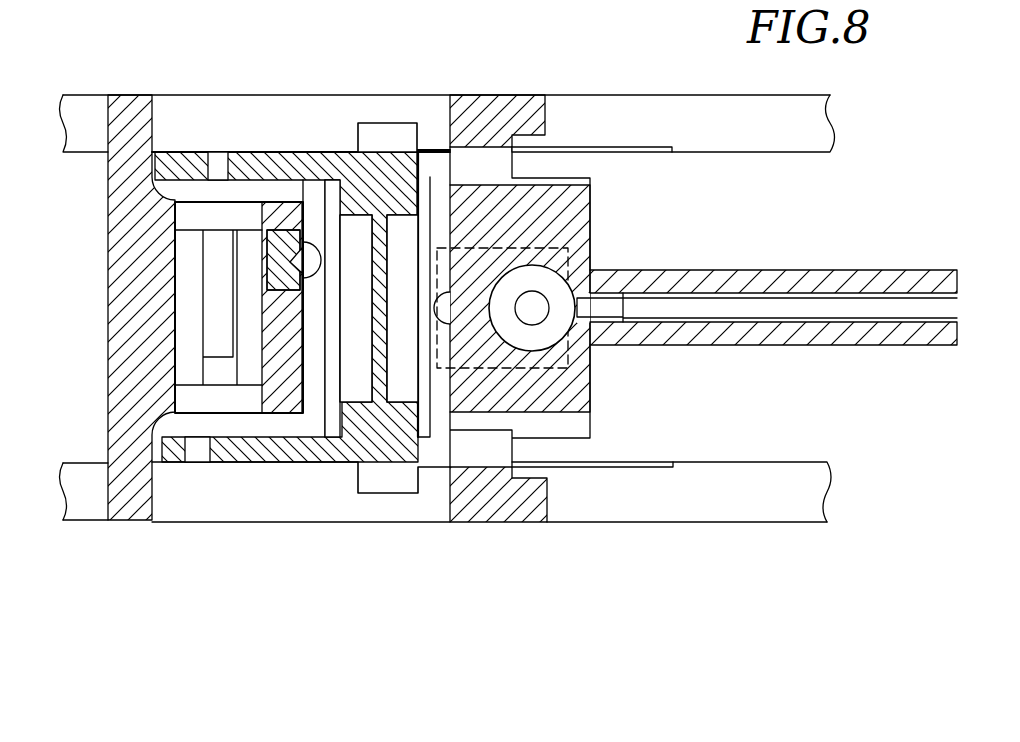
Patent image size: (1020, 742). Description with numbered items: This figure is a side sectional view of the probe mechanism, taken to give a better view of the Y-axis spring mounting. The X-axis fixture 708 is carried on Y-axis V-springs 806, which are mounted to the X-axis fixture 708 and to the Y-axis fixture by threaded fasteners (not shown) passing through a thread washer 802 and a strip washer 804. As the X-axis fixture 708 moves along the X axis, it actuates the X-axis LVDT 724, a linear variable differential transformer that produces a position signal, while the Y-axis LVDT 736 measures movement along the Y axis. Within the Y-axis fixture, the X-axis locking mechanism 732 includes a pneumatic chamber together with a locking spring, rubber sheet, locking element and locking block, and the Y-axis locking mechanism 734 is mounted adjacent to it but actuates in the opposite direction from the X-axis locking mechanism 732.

The X-axis fixture 708 is at (777, 270).
The X-axis LVDT 724 is at (553, 328).
The X-axis locking mechanism 732 is at (398, 390).
The Y-axis locking mechanism 734 is at (350, 390).
The Y-axis LVDT 736 is at (185, 300).
The thread washer 802 is at (478, 168).
The strip washer 804 is at (388, 127).
The Y-axis V-springs 806 is at (618, 147).